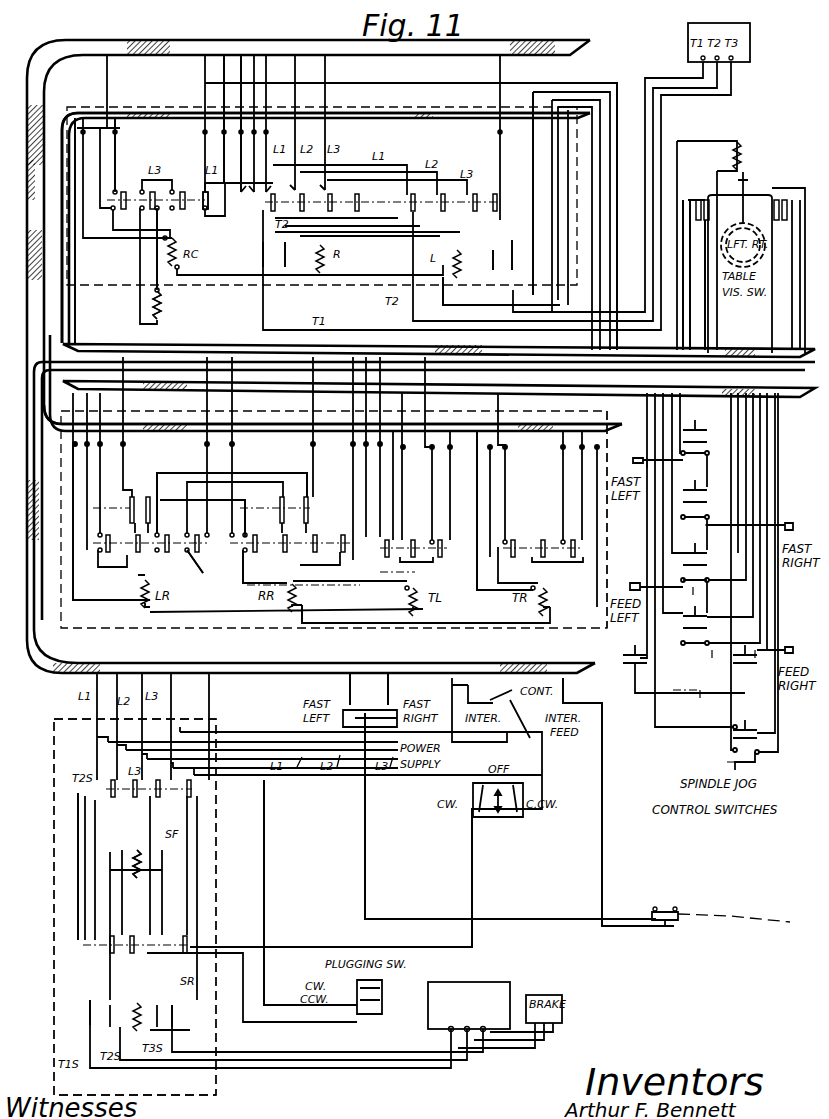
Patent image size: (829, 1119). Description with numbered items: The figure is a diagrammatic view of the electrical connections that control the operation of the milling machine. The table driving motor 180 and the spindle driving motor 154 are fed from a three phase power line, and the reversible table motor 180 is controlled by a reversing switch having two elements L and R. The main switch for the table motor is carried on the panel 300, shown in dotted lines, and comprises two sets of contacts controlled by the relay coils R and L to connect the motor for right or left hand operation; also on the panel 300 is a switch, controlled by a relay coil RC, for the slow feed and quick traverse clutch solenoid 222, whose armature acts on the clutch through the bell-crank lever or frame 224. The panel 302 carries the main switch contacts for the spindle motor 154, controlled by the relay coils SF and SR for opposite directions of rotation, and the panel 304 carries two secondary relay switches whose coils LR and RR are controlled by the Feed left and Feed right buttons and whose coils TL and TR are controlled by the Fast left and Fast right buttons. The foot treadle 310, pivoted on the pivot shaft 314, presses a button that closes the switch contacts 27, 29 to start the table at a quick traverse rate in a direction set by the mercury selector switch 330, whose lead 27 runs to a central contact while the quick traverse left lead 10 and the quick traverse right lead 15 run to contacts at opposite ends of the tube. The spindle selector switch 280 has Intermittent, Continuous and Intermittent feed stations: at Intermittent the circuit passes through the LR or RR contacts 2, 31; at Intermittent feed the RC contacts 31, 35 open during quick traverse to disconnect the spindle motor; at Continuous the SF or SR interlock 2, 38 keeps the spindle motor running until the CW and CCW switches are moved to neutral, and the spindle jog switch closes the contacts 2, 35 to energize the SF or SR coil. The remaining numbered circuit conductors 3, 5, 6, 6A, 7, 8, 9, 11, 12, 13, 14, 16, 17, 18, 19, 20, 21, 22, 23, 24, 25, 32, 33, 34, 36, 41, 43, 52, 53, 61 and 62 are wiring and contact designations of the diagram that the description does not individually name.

The contact 2 is at (432, 536).
The conductor 3 is at (450, 448).
The conductor 5 is at (612, 402).
The conductor 6 is at (177, 531).
The conductor 6A is at (128, 998).
The conductor 7 is at (450, 539).
The conductor 8 is at (442, 213).
The conductor 9 is at (429, 517).
The quick traverse left lead 10 is at (528, 539).
The conductor 11 is at (542, 567).
The conductor 12 is at (478, 520).
The conductor 13 is at (202, 518).
The conductor 14 is at (454, 522).
The quick traverse right lead 15 is at (559, 537).
The conductor 16 is at (565, 532).
The conductor 17 is at (420, 358).
The conductor 18 is at (489, 337).
The conductor 19 is at (473, 406).
The conductor 20 is at (242, 385).
The conductor 21 is at (350, 349).
The conductor 22 is at (574, 359).
The conductor 23 is at (625, 362).
The conductor 24 is at (415, 337).
The conductor 25 is at (469, 349).
The lead 27 is at (497, 816).
The switch contact 29 is at (589, 503).
The contact 31 is at (264, 374).
The conductor 32 is at (359, 891).
The conductor 33 is at (178, 922).
The conductor 34 is at (366, 921).
The contact 35 is at (492, 424).
The conductor 36 is at (162, 864).
The interlock contact 38 is at (353, 793).
The contact 41 is at (274, 252).
The contact 43 is at (521, 250).
The conductor 52 is at (77, 894).
The conductor 53 is at (160, 952).
The contact 61 is at (195, 208).
The conductor 62 is at (136, 258).
The spindle driving motor 154 is at (482, 985).
The table motor 180 is at (750, 30).
The solenoid 222 is at (160, 310).
The bell-crank lever or frame 224 is at (682, 908).
The selector switch 280 is at (527, 748).
The panel 300 is at (95, 105).
The panel 302 is at (190, 1094).
The panel 304 is at (93, 628).
The foot treadle 310 is at (720, 935).
The pivot shaft 314 is at (655, 908).
The mercury switch 330 is at (405, 668).